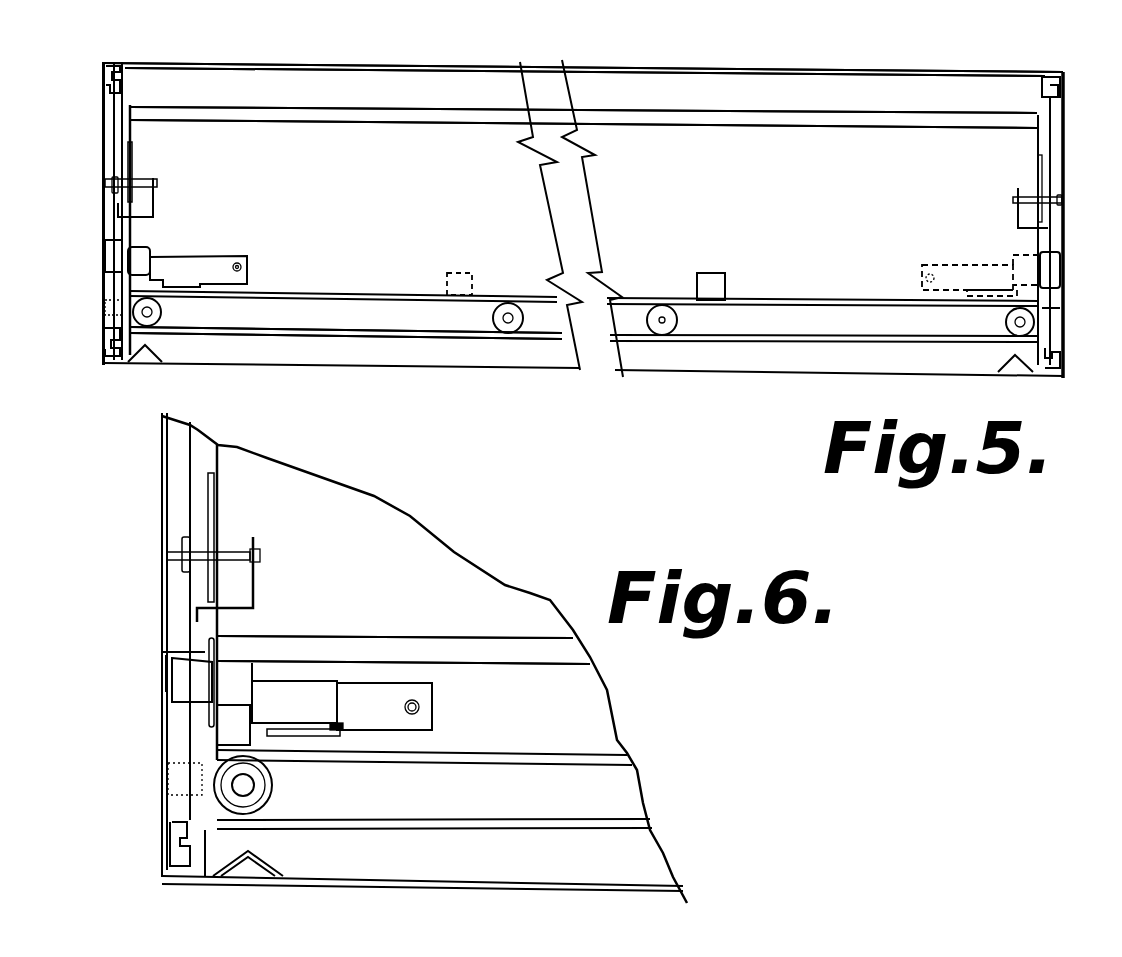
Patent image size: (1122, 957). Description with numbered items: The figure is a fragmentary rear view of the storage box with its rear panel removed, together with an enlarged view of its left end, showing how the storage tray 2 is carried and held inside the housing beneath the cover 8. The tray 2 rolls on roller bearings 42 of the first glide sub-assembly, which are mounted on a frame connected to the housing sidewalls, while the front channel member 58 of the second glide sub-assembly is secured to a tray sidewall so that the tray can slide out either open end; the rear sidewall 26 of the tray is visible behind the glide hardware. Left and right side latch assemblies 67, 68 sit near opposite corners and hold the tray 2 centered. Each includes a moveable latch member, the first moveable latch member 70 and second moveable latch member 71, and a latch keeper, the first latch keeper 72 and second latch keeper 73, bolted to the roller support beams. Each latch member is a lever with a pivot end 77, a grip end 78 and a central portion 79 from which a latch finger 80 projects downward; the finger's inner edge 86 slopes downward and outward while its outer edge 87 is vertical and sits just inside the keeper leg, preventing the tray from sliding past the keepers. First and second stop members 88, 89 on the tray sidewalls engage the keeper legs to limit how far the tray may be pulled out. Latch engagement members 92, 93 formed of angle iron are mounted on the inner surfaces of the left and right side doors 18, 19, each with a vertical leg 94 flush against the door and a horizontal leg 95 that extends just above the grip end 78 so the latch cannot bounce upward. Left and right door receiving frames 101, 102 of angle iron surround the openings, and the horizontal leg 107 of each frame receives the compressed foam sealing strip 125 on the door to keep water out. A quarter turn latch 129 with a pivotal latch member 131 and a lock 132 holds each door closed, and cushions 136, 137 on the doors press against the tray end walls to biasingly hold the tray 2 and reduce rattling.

In FIG. 5, the storage tray 2 is at (686, 118).
In FIG. 6, the storage tray 2 is at (552, 637).
In FIG. 5, the cover 8 is at (450, 62).
In FIG. 5, the left side door 18 is at (1067, 117).
In FIG. 5, the right side door 19 is at (120, 300).
In FIG. 6, the right side door 19 is at (162, 778).
In FIG. 5, the rear sidewall 26 is at (357, 211).
In FIG. 5, the roller bearings 42 is at (520, 325).
In FIG. 6, the roller bearings 42 is at (273, 795).
In FIG. 5, the front channel member 58 is at (362, 338).
In FIG. 5, the left side latch assembly 67 is at (927, 263).
In FIG. 5, the right side latch assembly 68 is at (203, 248).
In FIG. 6, the right side latch assembly 68 is at (440, 708).
In FIG. 5, the first moveable latch member 70 is at (997, 259).
In FIG. 5, the second moveable latch member 71 is at (172, 252).
In FIG. 6, the second moveable latch member 71 is at (333, 680).
In FIG. 5, the first latch keeper 72 is at (977, 298).
In FIG. 5, the second latch keeper 73 is at (193, 290).
In FIG. 6, the second latch keeper 73 is at (302, 737).
In FIG. 6, the pivot end 77 is at (420, 710).
In FIG. 6, the grip end 78 is at (185, 695).
In FIG. 6, the central portion 79 is at (305, 678).
In FIG. 6, the latch finger 80 is at (357, 731).
In FIG. 6, the inner edge 86 is at (360, 728).
In FIG. 6, the outer edge 87 is at (338, 722).
In FIG. 5, the first stop member 88 is at (447, 273).
In FIG. 5, the second stop member 89 is at (714, 273).
In FIG. 5, the latch engagement member 92 is at (1045, 250).
In FIG. 5, the latch engagement member 93 is at (108, 231).
In FIG. 6, the vertical leg 94 is at (170, 673).
In FIG. 6, the horizontal leg 95 is at (188, 645).
In FIG. 5, the left door receiving frame 101 is at (1042, 85).
In FIG. 5, the right door receiving frame 102 is at (133, 77).
In FIG. 6, the right door receiving frame 102 is at (193, 438).
In FIG. 5, the horizontal leg 107 is at (1048, 95).
In FIG. 5, the foam sealing strip 125 is at (110, 73).
In FIG. 6, the foam sealing strip 125 is at (173, 822).
In FIG. 5, the quarter turn latch 129 is at (112, 184).
In FIG. 6, the quarter turn latch 129 is at (184, 537).
In FIG. 5, the pivotal latch member 131 is at (131, 157).
In FIG. 6, the pivotal latch member 131 is at (208, 482).
In FIG. 6, the lock 132 is at (180, 545).
In FIG. 5, the cushion 136 is at (113, 312).
In FIG. 5, the cushion 137 is at (1057, 318).
In FIG. 6, the cushion 137 is at (182, 787).